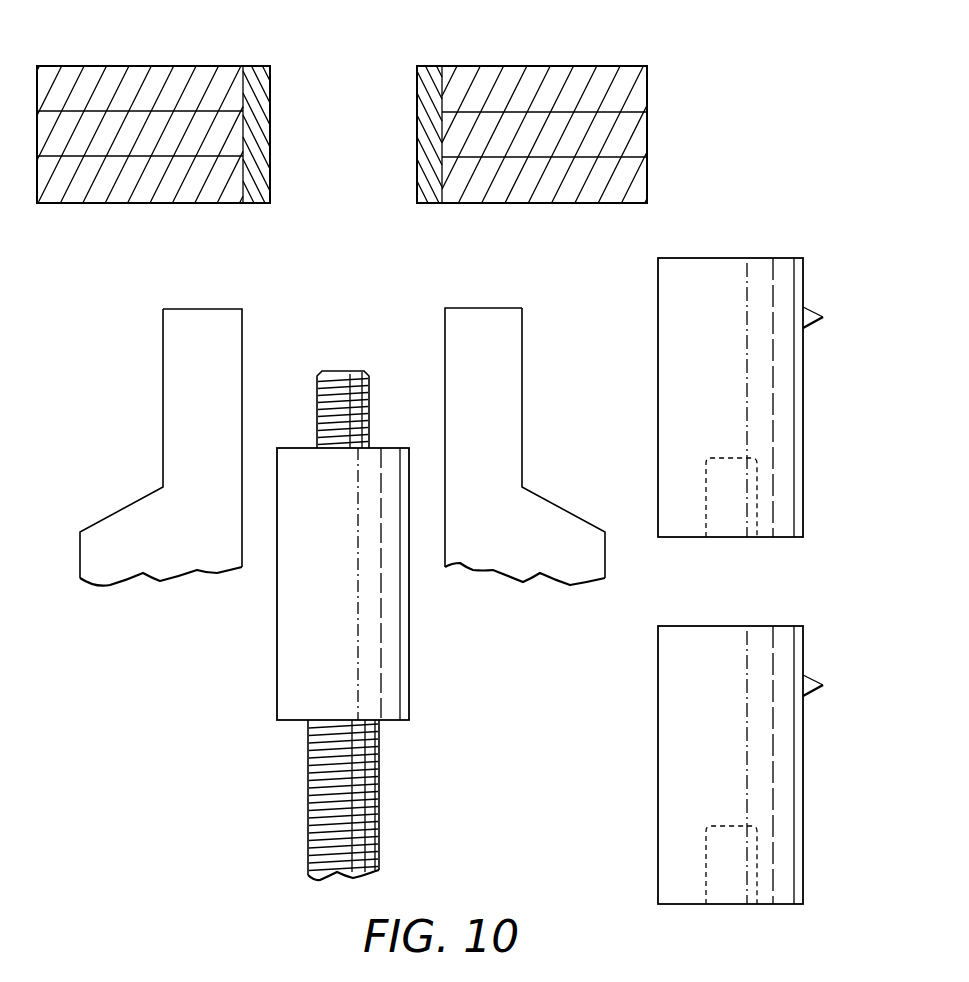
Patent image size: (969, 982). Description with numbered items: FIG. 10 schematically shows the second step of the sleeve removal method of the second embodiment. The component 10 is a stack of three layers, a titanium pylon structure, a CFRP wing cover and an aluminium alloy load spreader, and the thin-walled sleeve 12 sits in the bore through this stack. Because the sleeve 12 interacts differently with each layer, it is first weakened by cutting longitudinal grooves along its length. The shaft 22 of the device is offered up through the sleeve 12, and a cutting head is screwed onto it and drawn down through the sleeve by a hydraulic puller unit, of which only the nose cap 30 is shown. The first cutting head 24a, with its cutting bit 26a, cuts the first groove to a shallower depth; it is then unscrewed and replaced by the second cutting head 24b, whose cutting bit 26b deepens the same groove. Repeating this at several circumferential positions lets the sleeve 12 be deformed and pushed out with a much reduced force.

The component 10 is at (544, 65).
The sleeve 12 is at (423, 65).
The shaft 22 is at (410, 691).
The first cutting head 24a is at (728, 626).
The second cutting head 24b is at (728, 258).
The cutting bit 26a is at (823, 685).
The cutting bit 26b is at (823, 317).
The nose cap 30 is at (80, 542).